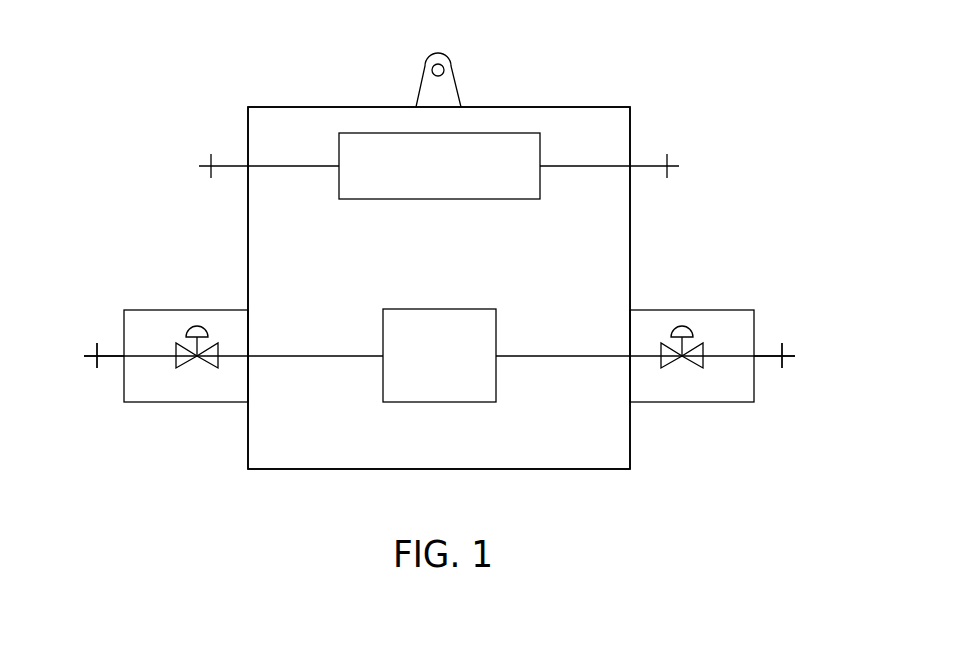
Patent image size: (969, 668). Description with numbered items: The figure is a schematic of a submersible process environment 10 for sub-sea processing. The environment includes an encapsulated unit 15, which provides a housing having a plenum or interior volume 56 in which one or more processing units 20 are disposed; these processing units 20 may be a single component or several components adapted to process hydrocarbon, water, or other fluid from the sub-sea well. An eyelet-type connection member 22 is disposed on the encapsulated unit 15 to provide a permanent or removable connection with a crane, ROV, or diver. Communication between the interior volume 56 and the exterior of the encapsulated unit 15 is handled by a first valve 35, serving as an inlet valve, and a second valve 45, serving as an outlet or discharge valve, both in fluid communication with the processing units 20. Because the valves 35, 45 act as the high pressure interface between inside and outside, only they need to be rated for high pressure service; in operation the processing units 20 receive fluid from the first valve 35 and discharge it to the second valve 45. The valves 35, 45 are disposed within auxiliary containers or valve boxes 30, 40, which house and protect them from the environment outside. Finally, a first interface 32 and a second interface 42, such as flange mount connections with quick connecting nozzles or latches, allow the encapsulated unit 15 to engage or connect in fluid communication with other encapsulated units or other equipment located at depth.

The submersible process environment 10 is at (160, 98).
The encapsulated unit 15 is at (283, 107).
The processing unit 20 is at (451, 175).
The connection member 22 is at (447, 55).
The valve box 30 is at (148, 310).
The first interface 32 is at (97, 367).
The first valve 35 is at (190, 362).
The valve box 40 is at (714, 310).
The second interface 42 is at (785, 369).
The second valve 45 is at (692, 368).
The interior volume 56 is at (314, 242).